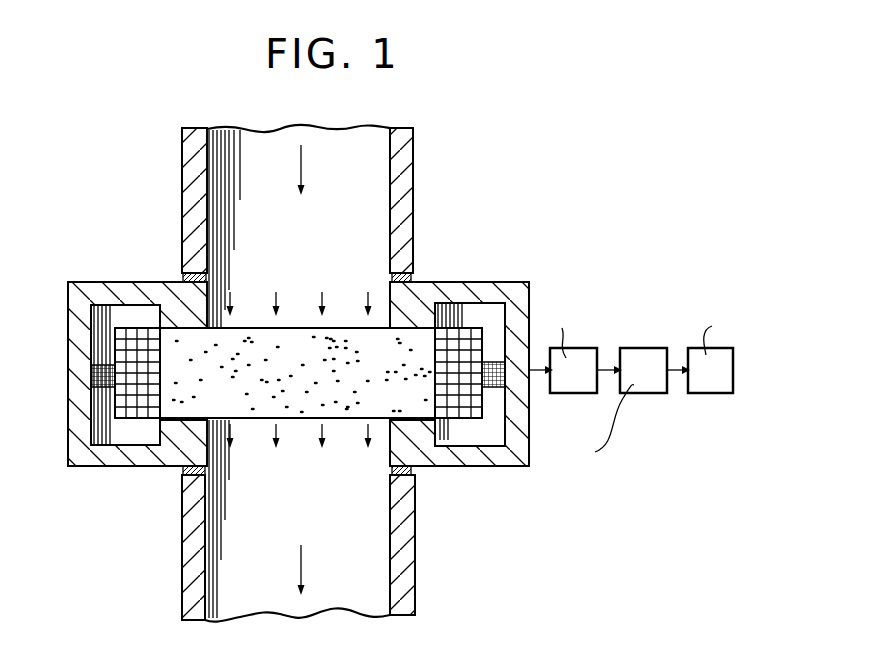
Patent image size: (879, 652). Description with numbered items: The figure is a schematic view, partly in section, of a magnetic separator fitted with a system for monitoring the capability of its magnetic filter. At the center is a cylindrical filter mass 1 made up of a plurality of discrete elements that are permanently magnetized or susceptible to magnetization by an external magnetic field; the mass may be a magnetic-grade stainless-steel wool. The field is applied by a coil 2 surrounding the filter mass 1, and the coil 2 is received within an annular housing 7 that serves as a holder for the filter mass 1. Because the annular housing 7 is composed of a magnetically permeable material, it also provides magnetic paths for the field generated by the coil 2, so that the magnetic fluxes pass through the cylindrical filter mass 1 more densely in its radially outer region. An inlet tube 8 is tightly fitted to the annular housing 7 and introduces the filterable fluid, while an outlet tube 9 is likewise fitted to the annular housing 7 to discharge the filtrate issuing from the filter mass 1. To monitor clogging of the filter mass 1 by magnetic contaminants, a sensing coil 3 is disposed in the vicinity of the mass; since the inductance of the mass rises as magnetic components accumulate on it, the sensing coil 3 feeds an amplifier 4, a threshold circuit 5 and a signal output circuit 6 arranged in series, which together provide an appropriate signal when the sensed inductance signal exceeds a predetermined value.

The cylindrical filter mass 1 is at (255, 420).
The coil 2 is at (134, 420).
The sensing coil 3 is at (90, 375).
The amplifier 4 is at (583, 393).
The threshold circuit 5 is at (647, 393).
The signal output circuit 6 is at (715, 393).
The annular housing 7 is at (78, 412).
The inlet tube 8 is at (413, 200).
The outlet tube 9 is at (415, 575).